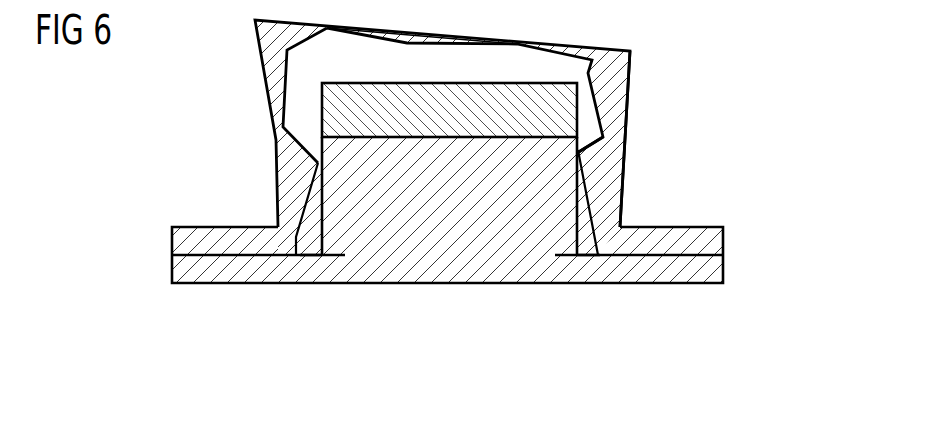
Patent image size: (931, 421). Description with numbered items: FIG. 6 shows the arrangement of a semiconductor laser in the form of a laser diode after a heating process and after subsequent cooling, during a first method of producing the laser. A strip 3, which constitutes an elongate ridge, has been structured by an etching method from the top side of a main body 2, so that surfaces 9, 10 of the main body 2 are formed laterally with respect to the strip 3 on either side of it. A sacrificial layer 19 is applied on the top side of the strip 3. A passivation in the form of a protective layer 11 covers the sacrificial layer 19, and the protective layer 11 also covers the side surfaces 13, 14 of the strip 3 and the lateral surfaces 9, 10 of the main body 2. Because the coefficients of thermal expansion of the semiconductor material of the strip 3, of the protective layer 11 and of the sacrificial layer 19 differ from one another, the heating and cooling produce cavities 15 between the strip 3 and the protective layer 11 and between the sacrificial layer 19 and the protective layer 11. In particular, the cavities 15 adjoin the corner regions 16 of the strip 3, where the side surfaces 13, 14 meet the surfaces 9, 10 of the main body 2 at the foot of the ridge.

The main body 2 is at (443, 262).
The strip 3 is at (342, 165).
The surface of the main body 9 is at (665, 244).
The surface of the main body 10 is at (220, 243).
The protective layer 11 is at (613, 93).
The side surface of the strip 13 is at (592, 207).
The side surface of the strip 14 is at (300, 211).
The cavities 15 is at (516, 58).
The corner regions of the strip 16 is at (322, 258).
The sacrificial layer 19 is at (445, 110).